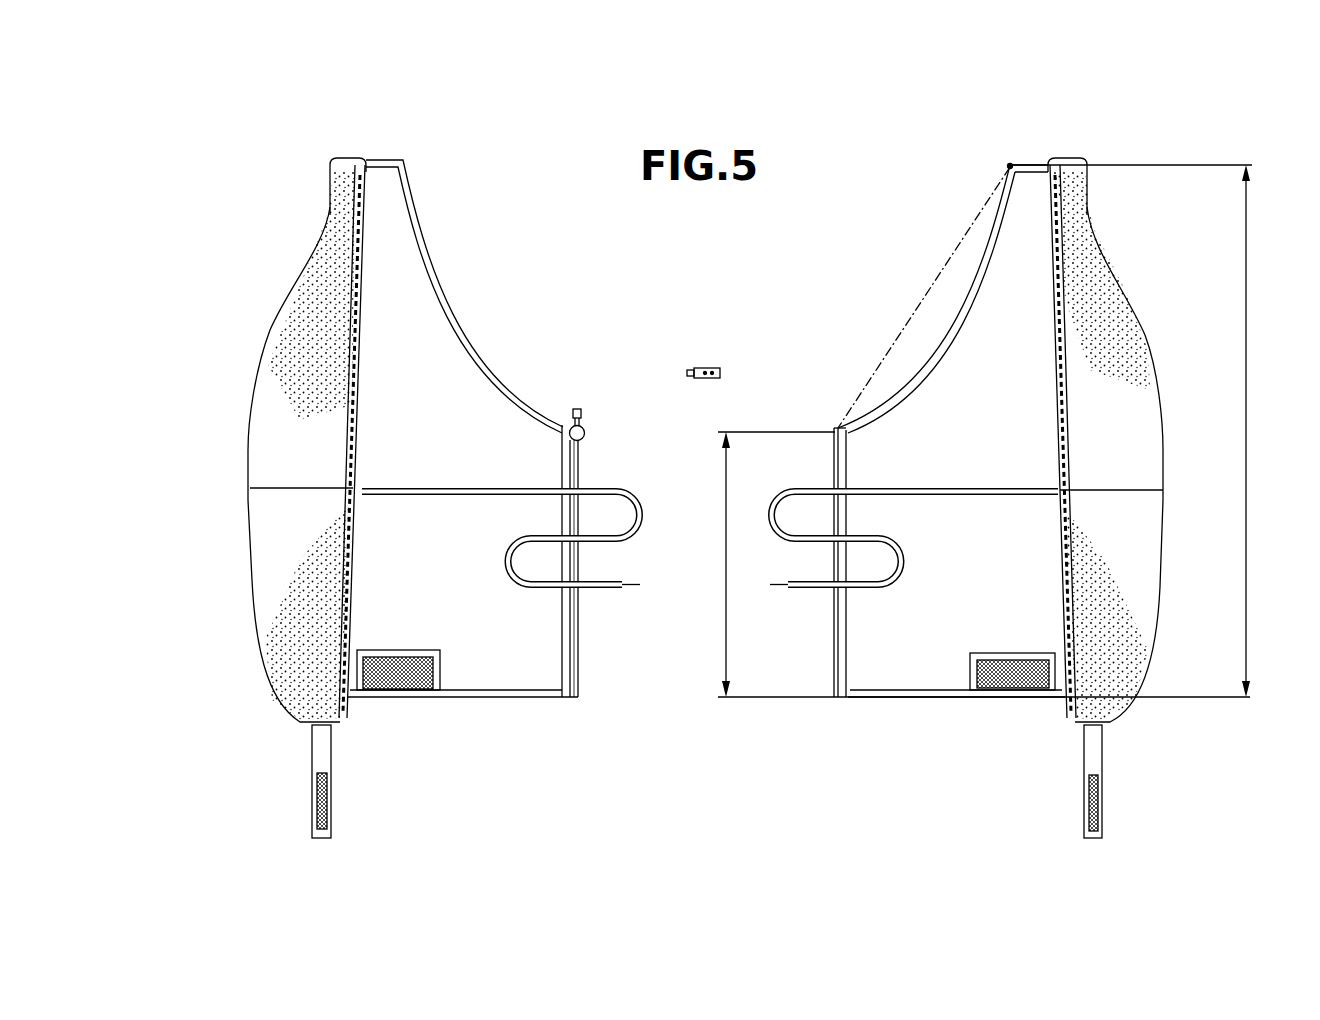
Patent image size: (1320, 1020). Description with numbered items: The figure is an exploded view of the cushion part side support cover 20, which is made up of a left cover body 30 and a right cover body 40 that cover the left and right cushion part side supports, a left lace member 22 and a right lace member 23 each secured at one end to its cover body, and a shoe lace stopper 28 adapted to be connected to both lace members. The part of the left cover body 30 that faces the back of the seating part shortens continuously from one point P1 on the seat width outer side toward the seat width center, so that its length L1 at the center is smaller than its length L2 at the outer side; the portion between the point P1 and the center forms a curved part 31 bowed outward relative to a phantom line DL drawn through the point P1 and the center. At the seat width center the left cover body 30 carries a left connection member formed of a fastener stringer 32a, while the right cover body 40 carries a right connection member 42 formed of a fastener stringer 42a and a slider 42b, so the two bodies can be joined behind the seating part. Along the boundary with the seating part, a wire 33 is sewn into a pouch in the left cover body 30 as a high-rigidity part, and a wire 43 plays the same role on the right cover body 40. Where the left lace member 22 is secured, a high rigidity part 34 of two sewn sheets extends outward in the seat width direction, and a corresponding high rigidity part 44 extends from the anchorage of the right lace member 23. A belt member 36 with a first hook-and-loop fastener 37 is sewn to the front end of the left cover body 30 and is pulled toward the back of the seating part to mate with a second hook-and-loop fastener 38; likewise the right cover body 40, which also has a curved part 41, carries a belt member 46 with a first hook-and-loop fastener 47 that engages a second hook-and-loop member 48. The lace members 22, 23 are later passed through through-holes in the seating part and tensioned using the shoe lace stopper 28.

The cushion part side support cover 20 is at (210, 177).
The left lace member 22 is at (872, 588).
The right lace member 23 is at (540, 588).
The shoe lace stopper 28 is at (708, 366).
The left cover body 30 is at (946, 700).
The curved part 31 is at (945, 317).
The fastener stringer 32a is at (834, 648).
The wire 33 is at (1048, 388).
The high rigidity part extending in the seat width direction 34 is at (1130, 490).
The belt member 36 is at (1092, 757).
The first hook-and-loop fastener 37 is at (1093, 805).
The second hook-and-loop fastener 38 is at (1012, 685).
The right cover body 40 is at (464, 700).
The curved part 41 is at (428, 248).
The right connection member 42 is at (625, 305).
The fastener stringer 42a is at (560, 465).
The slider 42b is at (588, 416).
The wire 43 is at (368, 418).
The high rigidity part 44 is at (290, 488).
The belt member 46 is at (320, 755).
The first hook-and-loop fastener 47 is at (322, 805).
The second hook-and-loop member 48 is at (405, 682).
The one point on the seat width outer side P1 is at (1009, 162).
The phantom line DL is at (920, 300).
The length at the seat width center L1 is at (969, 564).
The length at the seat width outer side L2 is at (1145, 431).